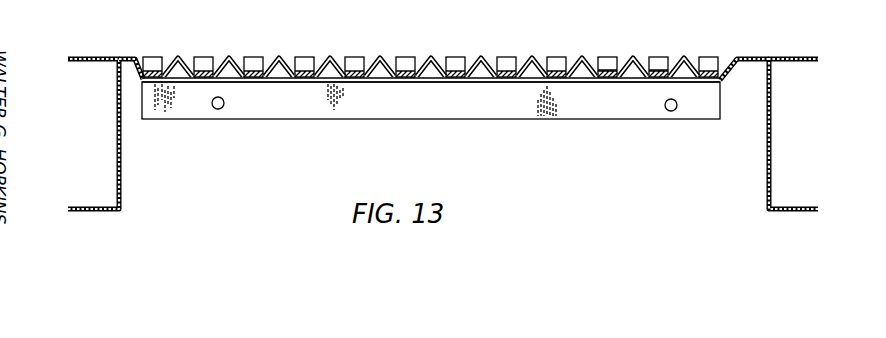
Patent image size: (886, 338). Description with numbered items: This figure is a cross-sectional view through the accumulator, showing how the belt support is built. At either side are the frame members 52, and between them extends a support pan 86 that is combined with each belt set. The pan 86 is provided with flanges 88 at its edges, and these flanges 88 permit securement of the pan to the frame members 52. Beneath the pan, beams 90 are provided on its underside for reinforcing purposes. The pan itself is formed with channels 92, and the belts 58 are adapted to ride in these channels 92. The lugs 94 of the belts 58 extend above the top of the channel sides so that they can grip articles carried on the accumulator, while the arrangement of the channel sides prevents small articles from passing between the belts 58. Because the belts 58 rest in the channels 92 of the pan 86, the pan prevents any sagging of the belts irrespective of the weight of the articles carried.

The frame member 52 is at (117, 132).
The flange 88 is at (107, 57).
The support pan 86 is at (410, 82).
The beam 90 is at (292, 110).
The lug 94 is at (450, 58).
The channel 92 is at (540, 62).
The belt 58 is at (654, 62).